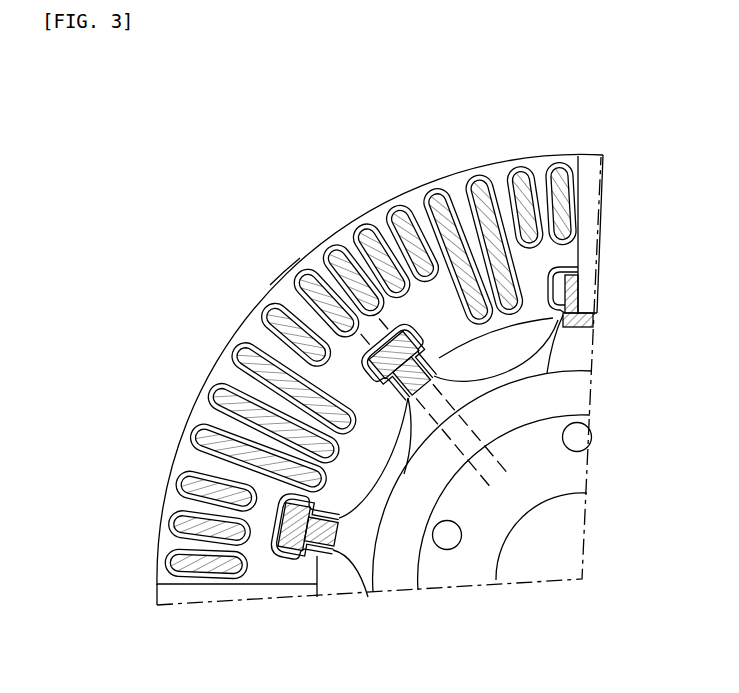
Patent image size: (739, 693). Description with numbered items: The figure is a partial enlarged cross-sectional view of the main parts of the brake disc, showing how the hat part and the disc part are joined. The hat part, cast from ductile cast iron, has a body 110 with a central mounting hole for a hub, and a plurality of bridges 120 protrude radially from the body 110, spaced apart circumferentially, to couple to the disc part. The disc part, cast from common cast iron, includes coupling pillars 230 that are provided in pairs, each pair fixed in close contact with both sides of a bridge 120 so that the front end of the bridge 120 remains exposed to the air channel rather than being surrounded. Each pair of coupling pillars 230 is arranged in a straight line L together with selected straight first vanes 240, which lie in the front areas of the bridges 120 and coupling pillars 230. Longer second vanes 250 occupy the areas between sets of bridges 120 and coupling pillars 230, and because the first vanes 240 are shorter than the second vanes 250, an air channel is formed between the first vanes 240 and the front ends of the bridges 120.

The body 110 is at (563, 398).
The bridge 120 is at (285, 556).
The coupling pillar 230 is at (273, 548).
The first vane 240 is at (561, 160).
The second vane 250 is at (480, 165).
The straight line L is at (293, 263).